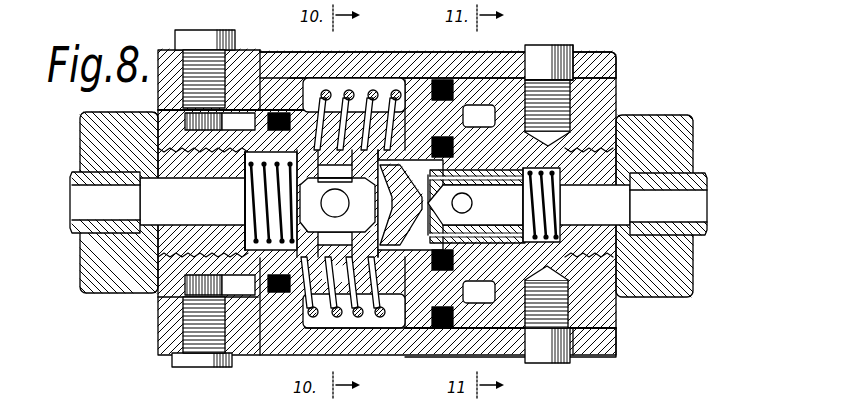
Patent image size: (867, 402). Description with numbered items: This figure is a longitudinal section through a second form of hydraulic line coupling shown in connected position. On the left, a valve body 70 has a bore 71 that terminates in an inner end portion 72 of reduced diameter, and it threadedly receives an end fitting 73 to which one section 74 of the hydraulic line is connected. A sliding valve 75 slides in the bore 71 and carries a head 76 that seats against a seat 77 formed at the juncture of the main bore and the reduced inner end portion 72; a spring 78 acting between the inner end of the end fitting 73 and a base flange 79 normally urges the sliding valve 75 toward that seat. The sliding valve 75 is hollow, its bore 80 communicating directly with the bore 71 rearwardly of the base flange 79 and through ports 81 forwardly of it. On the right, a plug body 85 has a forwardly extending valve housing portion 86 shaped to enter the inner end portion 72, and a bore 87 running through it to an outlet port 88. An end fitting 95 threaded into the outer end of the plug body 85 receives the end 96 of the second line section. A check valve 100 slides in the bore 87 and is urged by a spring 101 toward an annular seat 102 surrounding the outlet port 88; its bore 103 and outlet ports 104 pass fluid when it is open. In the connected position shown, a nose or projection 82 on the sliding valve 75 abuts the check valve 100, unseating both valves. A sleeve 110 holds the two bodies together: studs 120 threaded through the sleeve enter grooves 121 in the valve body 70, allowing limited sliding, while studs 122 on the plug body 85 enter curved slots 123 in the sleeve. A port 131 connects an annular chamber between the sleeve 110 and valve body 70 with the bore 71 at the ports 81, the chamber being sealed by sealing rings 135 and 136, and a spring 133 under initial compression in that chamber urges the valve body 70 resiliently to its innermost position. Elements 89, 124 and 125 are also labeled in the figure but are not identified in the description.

The valve body 70 is at (300, 318).
The bore 71 is at (262, 325).
The inner end portion 72 is at (395, 318).
The end fitting 73 is at (125, 287).
The section of hydraulic line 74 is at (72, 228).
The sliding valve 75 is at (408, 150).
The head 76 is at (438, 162).
The seat 77 is at (456, 80).
The spring 78 is at (263, 160).
The base flange 79 is at (333, 168).
The bore 80 is at (295, 193).
The ports 81 is at (374, 162).
The nose or projection 82 is at (385, 196).
The plug body 85 is at (612, 328).
The valve housing portion 86 is at (438, 290).
The bore 87 is at (495, 330).
The outlet port 88 is at (415, 214).
The valve seat 89 is at (428, 335).
The end fitting 95 is at (675, 290).
The end of second section of hydraulic line 96 is at (705, 236).
The check valve 100 is at (500, 300).
The spring 101 is at (550, 214).
The annular seat 102 is at (482, 105).
The bore 103 is at (545, 197).
The outlet ports 104 is at (468, 197).
The sleeve 110 is at (616, 57).
The studs 120 is at (178, 362).
The grooves 121 is at (238, 285).
The studs 122 is at (560, 362).
The curved slots 123 is at (612, 360).
The bolt hole 124 is at (500, 62).
The bolt 125 is at (530, 53).
The port 131 is at (346, 282).
The spring 133 is at (335, 318).
The sealing ring 135 is at (279, 113).
The sealing ring 136 is at (440, 328).